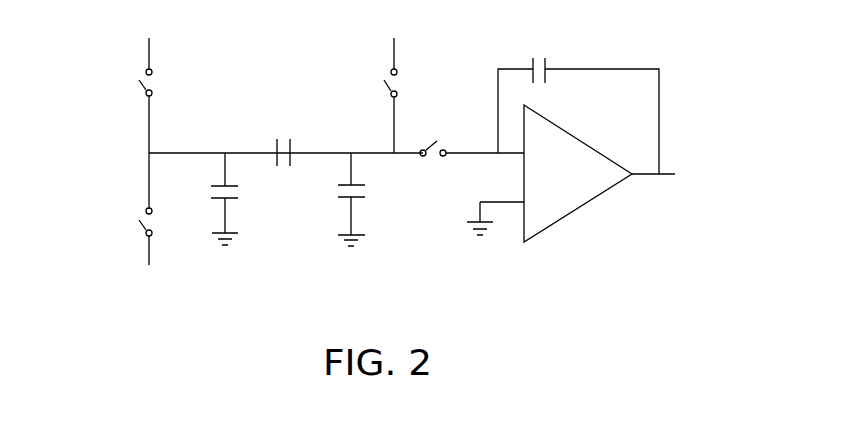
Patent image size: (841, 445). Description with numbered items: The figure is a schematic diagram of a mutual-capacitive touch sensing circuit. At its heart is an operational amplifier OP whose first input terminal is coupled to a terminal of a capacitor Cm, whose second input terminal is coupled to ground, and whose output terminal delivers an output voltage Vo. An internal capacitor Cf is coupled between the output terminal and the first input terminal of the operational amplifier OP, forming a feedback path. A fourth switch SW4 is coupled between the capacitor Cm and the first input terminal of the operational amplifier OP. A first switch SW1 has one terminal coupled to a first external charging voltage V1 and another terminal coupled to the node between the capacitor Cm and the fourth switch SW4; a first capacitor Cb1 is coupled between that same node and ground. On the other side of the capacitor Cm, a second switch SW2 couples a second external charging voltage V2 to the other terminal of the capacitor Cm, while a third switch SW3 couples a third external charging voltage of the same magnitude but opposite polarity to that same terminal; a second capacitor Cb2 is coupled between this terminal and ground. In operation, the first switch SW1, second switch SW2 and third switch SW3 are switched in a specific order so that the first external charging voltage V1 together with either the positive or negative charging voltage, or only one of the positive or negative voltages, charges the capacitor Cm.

The second external charging voltage V2 is at (148, 39).
The first external charging voltage V1 is at (394, 39).
The first switch SW1 is at (370, 111).
The second switch SW2 is at (125, 111).
The third switch SW3 is at (125, 195).
The fourth switch SW4 is at (439, 134).
The capacitor Cm is at (282, 139).
The first capacitor Cb1 is at (331, 199).
The second capacitor Cb2 is at (205, 199).
The internal capacitor Cf is at (578, 101).
The operational amplifier OP is at (580, 184).
The output voltage Vo is at (669, 174).